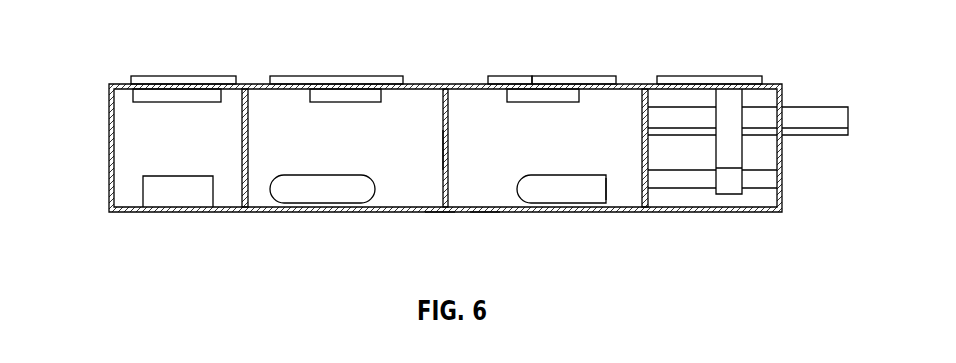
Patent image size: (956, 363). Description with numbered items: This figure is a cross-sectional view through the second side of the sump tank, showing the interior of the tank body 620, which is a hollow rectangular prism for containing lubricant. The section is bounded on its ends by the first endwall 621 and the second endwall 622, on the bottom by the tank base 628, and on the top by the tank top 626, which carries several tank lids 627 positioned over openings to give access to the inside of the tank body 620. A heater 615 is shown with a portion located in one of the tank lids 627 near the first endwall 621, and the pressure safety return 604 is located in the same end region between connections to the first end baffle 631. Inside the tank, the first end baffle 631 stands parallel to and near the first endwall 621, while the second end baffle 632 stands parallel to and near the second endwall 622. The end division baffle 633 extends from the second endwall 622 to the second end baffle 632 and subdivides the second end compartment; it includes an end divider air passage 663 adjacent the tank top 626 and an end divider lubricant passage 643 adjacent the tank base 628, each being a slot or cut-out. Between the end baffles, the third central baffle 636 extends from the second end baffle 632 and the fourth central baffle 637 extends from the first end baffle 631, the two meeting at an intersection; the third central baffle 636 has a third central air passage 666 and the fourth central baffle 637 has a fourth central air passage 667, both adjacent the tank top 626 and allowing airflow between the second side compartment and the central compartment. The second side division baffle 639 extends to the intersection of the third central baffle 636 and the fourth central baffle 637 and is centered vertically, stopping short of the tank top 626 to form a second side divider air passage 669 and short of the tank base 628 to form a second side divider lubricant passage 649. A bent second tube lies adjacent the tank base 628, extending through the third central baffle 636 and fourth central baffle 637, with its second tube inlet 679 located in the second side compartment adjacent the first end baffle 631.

The pressure safety return 604 is at (768, 181).
The heater 615 is at (736, 139).
The tank body 620 is at (765, 84).
The first endwall 621 is at (783, 160).
The second endwall 622 is at (111, 158).
The tank top 626 is at (497, 84).
The tank lids 627 is at (218, 76).
The tank base 628 is at (485, 210).
The first end baffle 631 is at (640, 143).
The second end baffle 632 is at (243, 160).
The end division baffle 633 is at (137, 128).
The third central baffle 636 is at (336, 139).
The fourth central baffle 637 is at (600, 128).
The second side division baffle 639 is at (443, 148).
The end divider lubricant passage 643 is at (177, 190).
The second side divider lubricant passage 649 is at (440, 200).
The end divider air passage 663 is at (172, 97).
The third central air passage 666 is at (324, 103).
The fourth central air passage 667 is at (555, 103).
The second side divider air passage 669 is at (443, 104).
The second tube inlet 679 is at (605, 190).